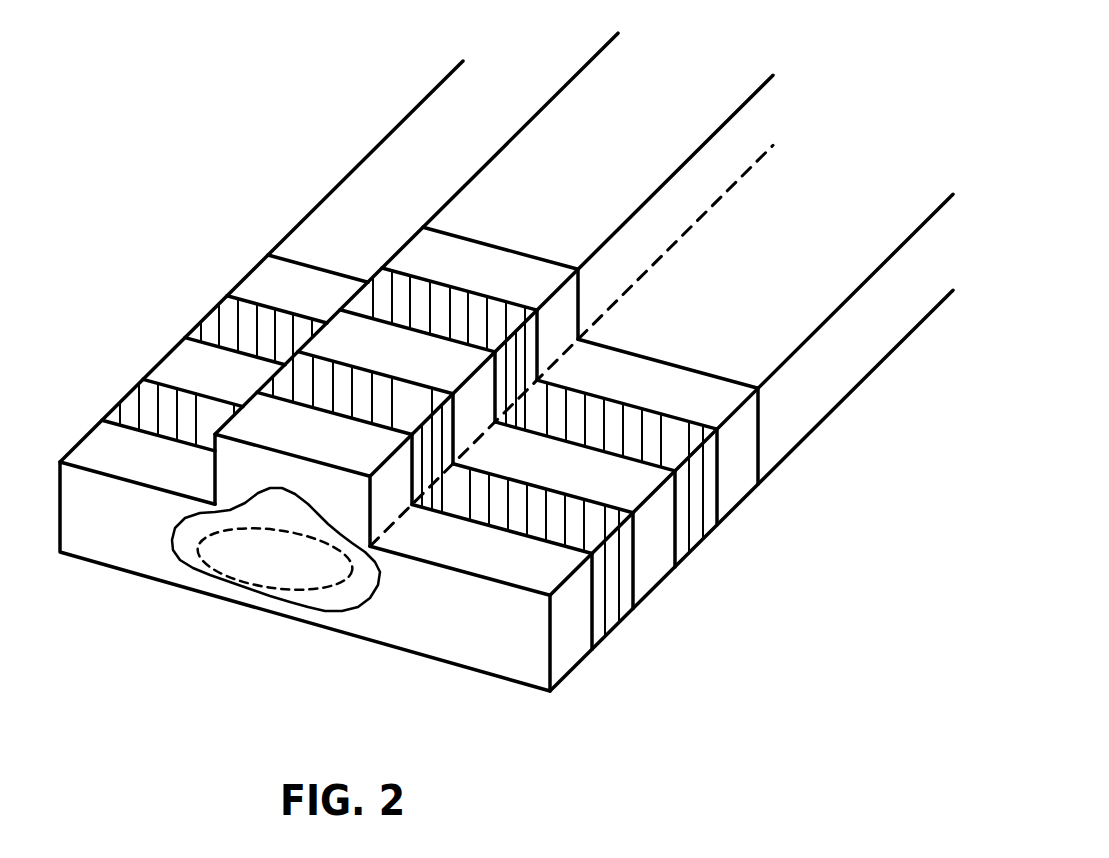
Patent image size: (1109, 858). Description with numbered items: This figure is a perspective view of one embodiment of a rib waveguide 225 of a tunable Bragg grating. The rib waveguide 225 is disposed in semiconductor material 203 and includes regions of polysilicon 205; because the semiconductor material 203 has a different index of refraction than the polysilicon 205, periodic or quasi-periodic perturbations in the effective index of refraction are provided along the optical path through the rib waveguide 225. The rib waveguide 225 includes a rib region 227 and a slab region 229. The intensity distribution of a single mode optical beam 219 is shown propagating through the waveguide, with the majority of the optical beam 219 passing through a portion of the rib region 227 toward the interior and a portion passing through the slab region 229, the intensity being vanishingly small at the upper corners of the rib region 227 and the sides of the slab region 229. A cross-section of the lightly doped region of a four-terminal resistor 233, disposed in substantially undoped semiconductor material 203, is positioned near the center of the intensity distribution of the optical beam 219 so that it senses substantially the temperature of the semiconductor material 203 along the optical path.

The semiconductor material 203 is at (738, 505).
The polysilicon 205 is at (696, 546).
The optical beam 219 is at (297, 602).
The rib waveguide 225 is at (943, 146).
The rib region 227 is at (356, 502).
The slab region 229 is at (501, 650).
The four-terminal resistor 233 is at (215, 570).